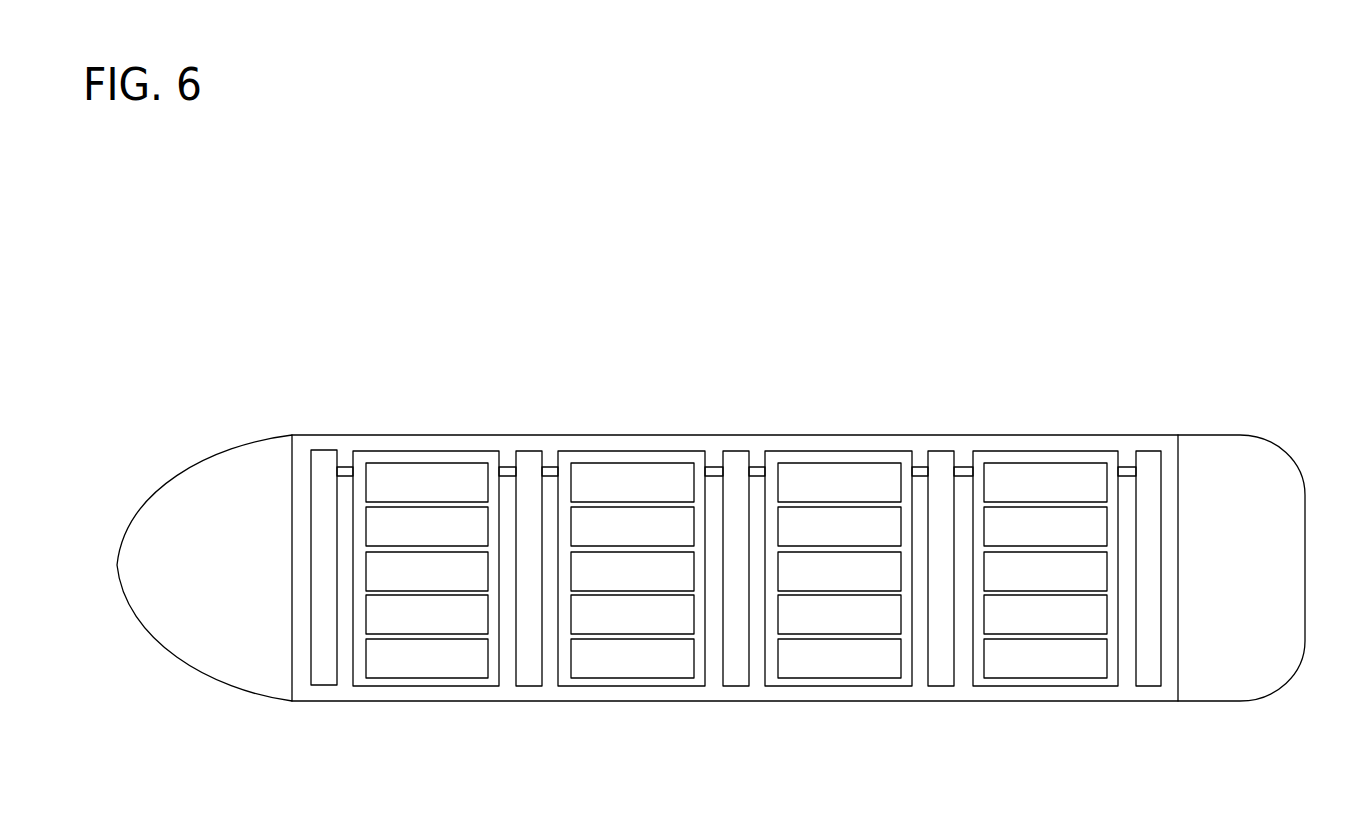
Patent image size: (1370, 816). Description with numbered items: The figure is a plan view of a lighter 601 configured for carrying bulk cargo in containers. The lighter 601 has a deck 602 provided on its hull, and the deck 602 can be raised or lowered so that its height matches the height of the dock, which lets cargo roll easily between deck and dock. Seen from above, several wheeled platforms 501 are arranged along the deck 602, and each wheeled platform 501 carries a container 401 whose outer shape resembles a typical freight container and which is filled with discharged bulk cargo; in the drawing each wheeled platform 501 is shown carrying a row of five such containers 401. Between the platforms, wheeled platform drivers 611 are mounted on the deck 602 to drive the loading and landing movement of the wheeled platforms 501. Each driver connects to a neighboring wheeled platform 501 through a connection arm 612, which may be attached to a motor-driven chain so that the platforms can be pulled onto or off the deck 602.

The lighter 601 is at (1313, 408).
The deck 602 is at (343, 442).
The wheeled platform 501 is at (427, 512).
The container 401 is at (418, 485).
The wheeled platform driver 611 is at (737, 452).
The connection arm 612 is at (712, 463).